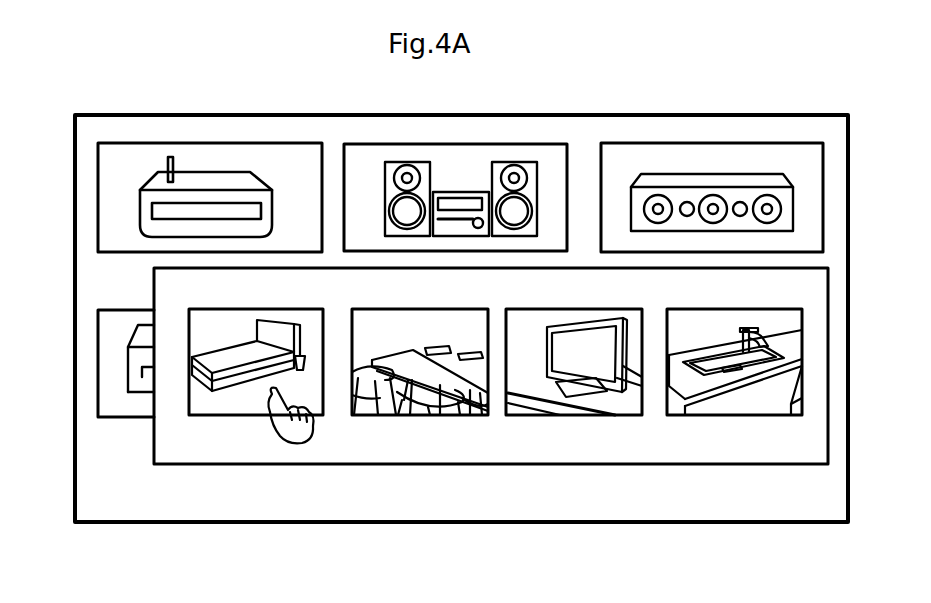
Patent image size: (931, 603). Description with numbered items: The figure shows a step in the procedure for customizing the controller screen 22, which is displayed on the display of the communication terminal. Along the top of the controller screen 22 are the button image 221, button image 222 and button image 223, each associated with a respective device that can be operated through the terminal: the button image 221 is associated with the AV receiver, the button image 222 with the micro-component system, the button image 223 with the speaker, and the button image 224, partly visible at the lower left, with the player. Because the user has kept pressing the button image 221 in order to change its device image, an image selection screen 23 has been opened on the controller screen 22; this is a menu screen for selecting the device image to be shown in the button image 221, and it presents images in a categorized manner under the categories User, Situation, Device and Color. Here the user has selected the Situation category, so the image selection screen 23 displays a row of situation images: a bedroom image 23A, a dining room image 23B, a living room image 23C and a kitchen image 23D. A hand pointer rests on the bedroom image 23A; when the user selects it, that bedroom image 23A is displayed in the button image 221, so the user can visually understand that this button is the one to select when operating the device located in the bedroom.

The controller screen 22 is at (767, 130).
The button image 221 is at (133, 148).
The button image 222 is at (375, 150).
The button image 223 is at (620, 148).
The button image 224 is at (98, 312).
The image selection screen 23 is at (175, 448).
The bedroom image 23A is at (245, 413).
The dining room image 23B is at (450, 418).
The living room image 23C is at (617, 418).
The kitchen image 23D is at (750, 418).